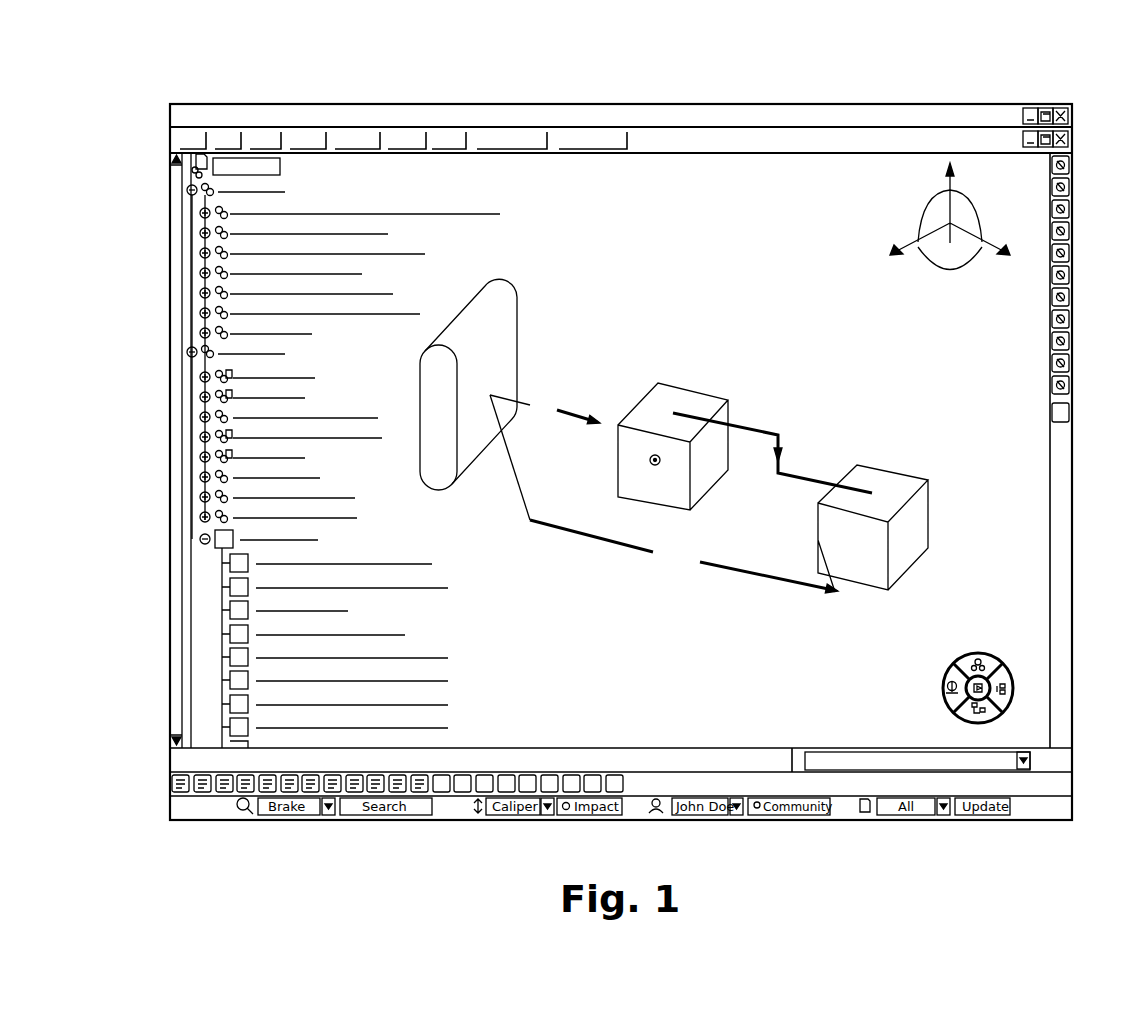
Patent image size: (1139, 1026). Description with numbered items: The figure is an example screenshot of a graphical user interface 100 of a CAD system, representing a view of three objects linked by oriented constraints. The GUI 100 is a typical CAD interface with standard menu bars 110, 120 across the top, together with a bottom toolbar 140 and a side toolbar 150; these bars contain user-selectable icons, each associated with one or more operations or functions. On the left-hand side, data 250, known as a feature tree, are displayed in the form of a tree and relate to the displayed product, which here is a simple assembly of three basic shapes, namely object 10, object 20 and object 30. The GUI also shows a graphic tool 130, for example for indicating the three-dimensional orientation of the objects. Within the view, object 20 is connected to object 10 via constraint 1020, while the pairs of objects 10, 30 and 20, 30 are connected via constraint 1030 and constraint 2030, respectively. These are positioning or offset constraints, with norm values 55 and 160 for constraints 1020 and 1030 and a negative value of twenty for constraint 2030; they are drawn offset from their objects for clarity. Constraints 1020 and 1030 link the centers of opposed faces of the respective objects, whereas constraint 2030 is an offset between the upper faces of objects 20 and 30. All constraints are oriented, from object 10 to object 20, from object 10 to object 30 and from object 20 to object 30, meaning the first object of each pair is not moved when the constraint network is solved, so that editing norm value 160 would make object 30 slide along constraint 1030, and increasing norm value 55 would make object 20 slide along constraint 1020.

The menu bar 110 is at (733, 113).
The menu bar 120 is at (820, 143).
The graphic tool 130 is at (965, 260).
The bottom toolbar 140 is at (632, 756).
The side toolbar 150 is at (1057, 447).
The data (feature tree) 250 is at (310, 432).
The graphical user interface 100 is at (878, 676).
The object 10 is at (506, 364).
The object 20 is at (668, 497).
The object 30 is at (865, 560).
The norm value 55 is at (545, 409).
The norm value 160 is at (664, 494).
The constraint 1020 is at (573, 405).
The constraint 2030 is at (800, 458).
The constraint 1030 is at (592, 546).